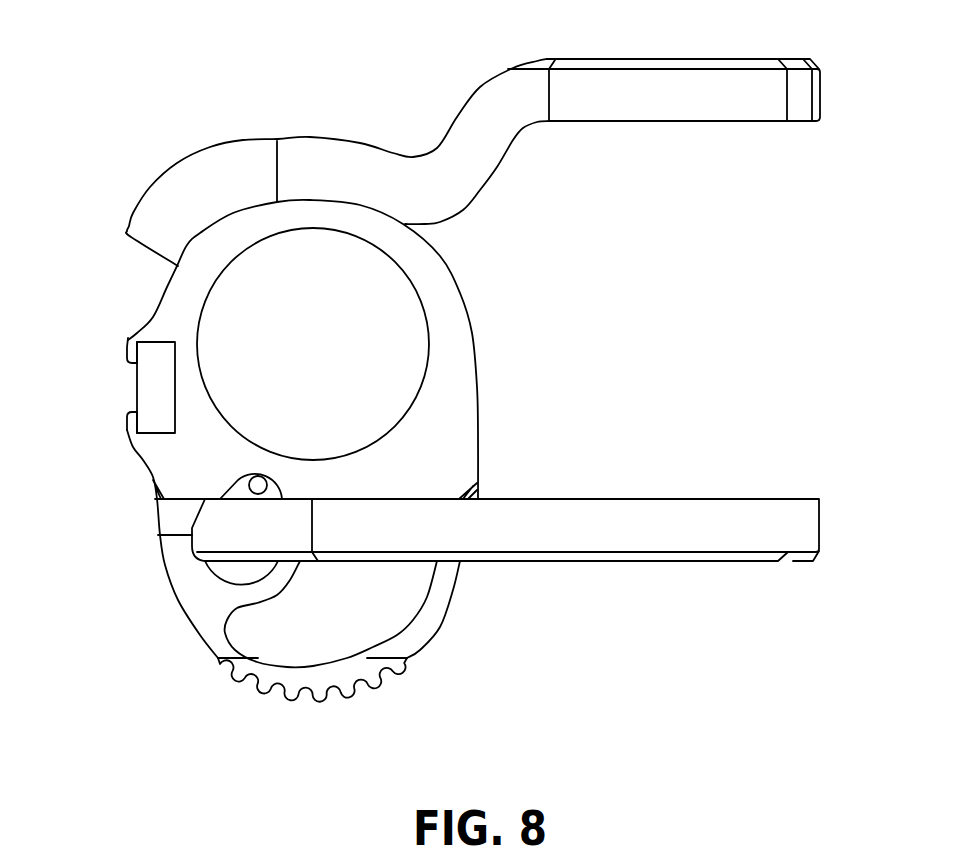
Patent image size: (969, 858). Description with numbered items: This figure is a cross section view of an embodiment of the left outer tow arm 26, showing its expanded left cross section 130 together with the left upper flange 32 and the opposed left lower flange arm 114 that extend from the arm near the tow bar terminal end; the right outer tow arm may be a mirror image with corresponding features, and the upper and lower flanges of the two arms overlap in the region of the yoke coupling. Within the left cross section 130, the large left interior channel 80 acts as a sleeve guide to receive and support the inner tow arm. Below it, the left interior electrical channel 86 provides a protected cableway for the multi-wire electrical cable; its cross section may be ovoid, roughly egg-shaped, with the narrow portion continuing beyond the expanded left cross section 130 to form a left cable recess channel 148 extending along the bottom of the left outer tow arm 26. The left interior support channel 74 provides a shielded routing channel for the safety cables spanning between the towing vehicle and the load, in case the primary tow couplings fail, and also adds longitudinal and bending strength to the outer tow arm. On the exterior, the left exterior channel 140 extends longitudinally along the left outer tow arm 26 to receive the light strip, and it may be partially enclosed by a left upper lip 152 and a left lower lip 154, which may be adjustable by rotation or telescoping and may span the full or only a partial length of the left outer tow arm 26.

The left outer tow arm 26 is at (548, 277).
The left upper flange 32 is at (745, 90).
The left lower flange arm 114 is at (743, 507).
The left interior channel 80 is at (405, 383).
The left cross section 130 is at (462, 450).
The left exterior channel 140 is at (138, 385).
The left upper lip 152 is at (128, 338).
The left lower lip 154 is at (126, 422).
The left cable recess channel 148 is at (250, 484).
The left interior electrical channel 86 is at (218, 572).
The left interior support channel 74 is at (385, 617).